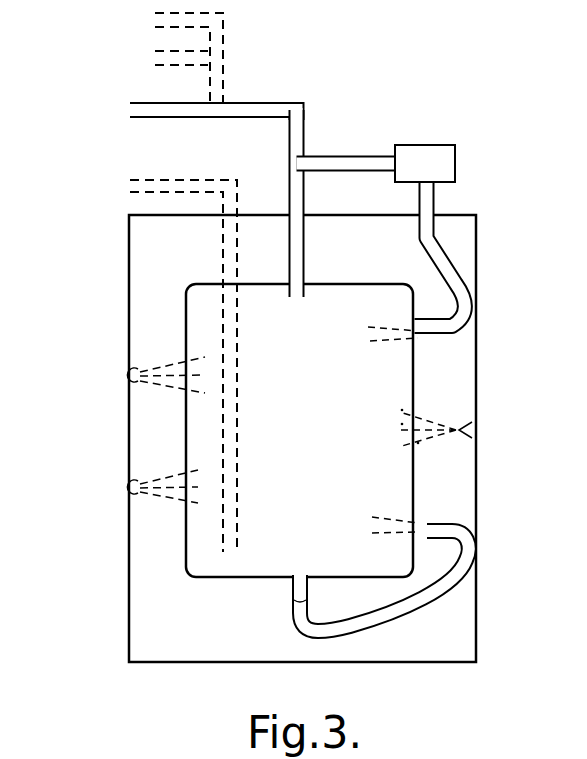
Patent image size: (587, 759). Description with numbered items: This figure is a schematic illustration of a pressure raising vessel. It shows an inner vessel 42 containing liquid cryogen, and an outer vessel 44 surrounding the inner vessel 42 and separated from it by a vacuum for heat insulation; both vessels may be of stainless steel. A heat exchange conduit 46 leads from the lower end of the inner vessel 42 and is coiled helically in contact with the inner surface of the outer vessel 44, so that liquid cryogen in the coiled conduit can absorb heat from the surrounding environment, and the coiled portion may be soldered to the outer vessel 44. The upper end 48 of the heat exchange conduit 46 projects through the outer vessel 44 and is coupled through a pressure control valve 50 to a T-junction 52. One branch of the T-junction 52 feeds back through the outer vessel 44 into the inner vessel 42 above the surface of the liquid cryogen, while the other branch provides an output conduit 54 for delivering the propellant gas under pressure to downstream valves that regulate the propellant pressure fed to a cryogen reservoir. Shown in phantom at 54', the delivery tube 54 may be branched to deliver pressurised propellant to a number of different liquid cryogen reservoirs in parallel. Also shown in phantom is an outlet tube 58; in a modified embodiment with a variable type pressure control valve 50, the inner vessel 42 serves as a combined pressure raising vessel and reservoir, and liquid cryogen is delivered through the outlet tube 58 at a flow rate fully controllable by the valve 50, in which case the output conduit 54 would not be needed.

The inner vessel 42 is at (222, 579).
The outer vessel 44 is at (130, 552).
The heat exchange conduit 46 is at (330, 632).
The upper end of the conduit 48 is at (450, 263).
The pressure control valve 50 is at (434, 150).
The T-junction 52 is at (290, 152).
The output conduit 54 is at (191, 136).
The branched delivery tube 54' is at (141, 58).
The outlet tube 58 is at (143, 192).